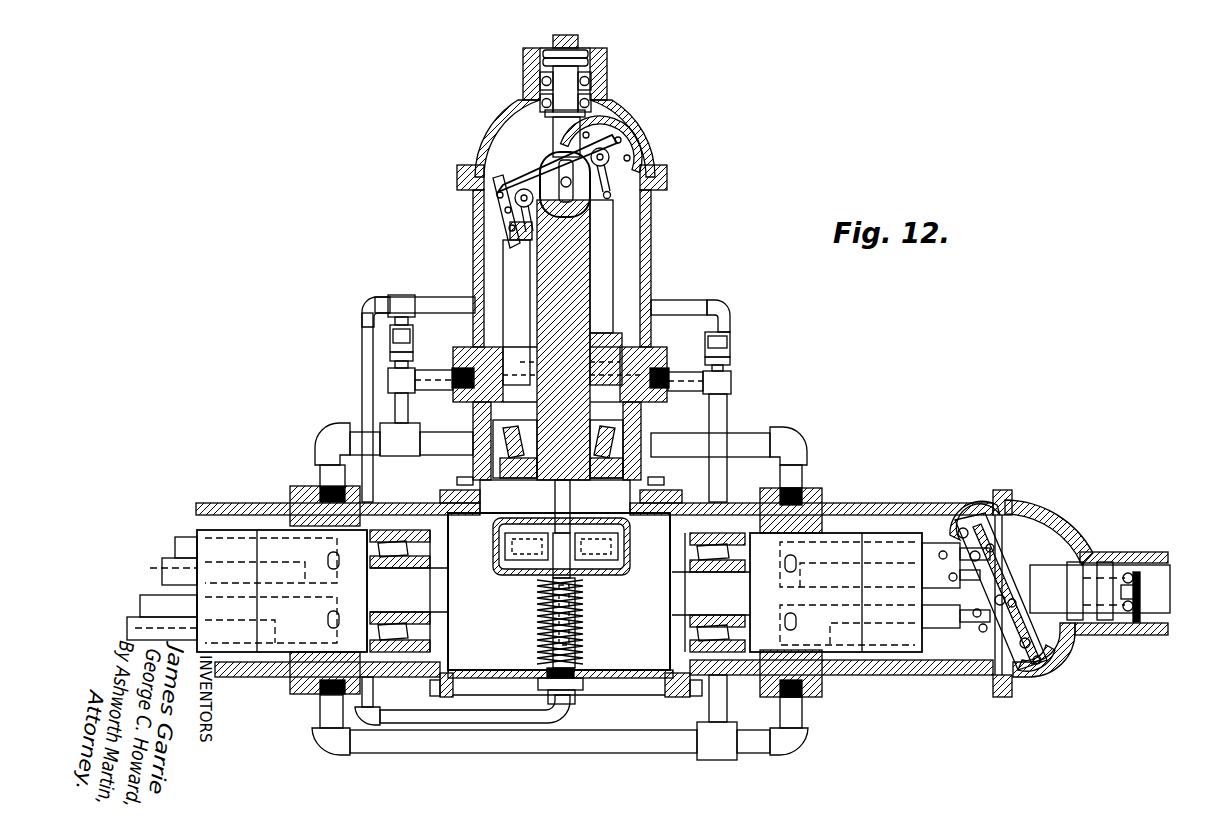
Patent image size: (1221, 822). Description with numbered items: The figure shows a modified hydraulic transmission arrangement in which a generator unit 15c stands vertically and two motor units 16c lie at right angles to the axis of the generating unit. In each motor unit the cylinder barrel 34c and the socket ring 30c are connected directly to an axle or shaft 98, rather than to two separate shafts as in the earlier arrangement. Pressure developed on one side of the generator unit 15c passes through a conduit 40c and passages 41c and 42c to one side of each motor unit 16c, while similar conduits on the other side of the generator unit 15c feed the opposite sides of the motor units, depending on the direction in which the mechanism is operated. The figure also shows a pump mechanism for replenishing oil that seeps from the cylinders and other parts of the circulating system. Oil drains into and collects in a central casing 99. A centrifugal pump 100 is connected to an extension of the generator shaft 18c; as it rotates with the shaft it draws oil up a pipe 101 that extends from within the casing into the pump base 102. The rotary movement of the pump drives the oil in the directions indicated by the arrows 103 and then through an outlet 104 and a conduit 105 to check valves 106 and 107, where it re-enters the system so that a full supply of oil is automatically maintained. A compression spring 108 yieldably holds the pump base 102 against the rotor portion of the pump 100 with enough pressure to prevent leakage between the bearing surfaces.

The generator unit 15c is at (650, 228).
The shaft 18c is at (578, 298).
The check valve 106 is at (413, 340).
The check valve 107 is at (730, 342).
The conduit 40c is at (397, 405).
The passage 41c is at (326, 444).
The passage 42c is at (763, 430).
The motor unit 16c is at (233, 502).
The cylinder barrel 34c is at (276, 530).
The socket ring 30c is at (983, 527).
The axle or shaft 98 is at (1170, 590).
The central casing 99 is at (607, 678).
The pump 100 is at (627, 522).
The pipe 101 is at (587, 580).
The pump base 102 is at (625, 556).
The arrows 103 is at (548, 518).
The outlet 104 is at (580, 596).
The conduit 105 is at (393, 714).
The compression spring 108 is at (540, 617).